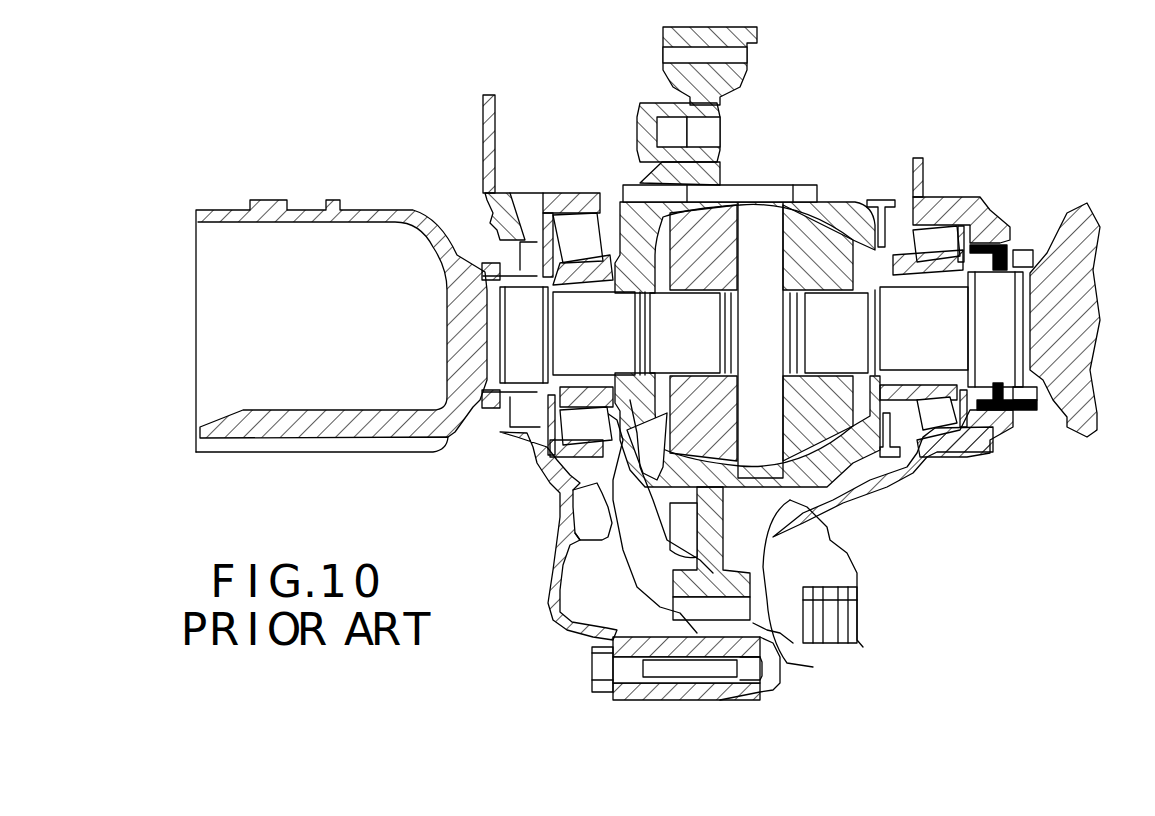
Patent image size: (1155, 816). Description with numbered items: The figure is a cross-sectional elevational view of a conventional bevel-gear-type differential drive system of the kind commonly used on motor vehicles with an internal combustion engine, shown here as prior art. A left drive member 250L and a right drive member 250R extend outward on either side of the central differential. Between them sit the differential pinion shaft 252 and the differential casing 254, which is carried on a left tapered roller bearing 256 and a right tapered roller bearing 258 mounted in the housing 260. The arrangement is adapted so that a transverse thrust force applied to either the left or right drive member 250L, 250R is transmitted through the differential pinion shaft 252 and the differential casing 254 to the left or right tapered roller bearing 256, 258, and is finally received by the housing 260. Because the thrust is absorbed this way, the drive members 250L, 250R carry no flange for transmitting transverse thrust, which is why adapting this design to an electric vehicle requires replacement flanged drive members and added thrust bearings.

The left drive member 250L is at (362, 205).
The right drive member 250R is at (1067, 228).
The differential pinion shaft 252 is at (757, 243).
The differential casing 254 is at (850, 220).
The left tapered roller bearing 256 is at (578, 253).
The right tapered roller bearing 258 is at (930, 247).
The housing 260 is at (493, 197).